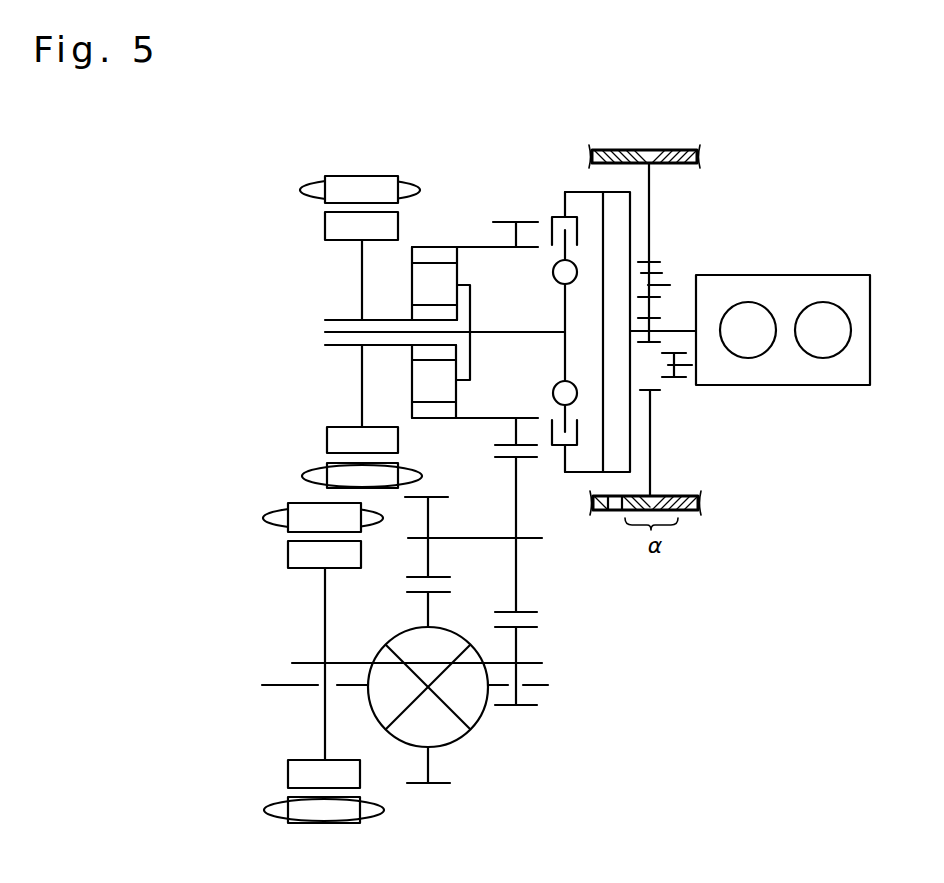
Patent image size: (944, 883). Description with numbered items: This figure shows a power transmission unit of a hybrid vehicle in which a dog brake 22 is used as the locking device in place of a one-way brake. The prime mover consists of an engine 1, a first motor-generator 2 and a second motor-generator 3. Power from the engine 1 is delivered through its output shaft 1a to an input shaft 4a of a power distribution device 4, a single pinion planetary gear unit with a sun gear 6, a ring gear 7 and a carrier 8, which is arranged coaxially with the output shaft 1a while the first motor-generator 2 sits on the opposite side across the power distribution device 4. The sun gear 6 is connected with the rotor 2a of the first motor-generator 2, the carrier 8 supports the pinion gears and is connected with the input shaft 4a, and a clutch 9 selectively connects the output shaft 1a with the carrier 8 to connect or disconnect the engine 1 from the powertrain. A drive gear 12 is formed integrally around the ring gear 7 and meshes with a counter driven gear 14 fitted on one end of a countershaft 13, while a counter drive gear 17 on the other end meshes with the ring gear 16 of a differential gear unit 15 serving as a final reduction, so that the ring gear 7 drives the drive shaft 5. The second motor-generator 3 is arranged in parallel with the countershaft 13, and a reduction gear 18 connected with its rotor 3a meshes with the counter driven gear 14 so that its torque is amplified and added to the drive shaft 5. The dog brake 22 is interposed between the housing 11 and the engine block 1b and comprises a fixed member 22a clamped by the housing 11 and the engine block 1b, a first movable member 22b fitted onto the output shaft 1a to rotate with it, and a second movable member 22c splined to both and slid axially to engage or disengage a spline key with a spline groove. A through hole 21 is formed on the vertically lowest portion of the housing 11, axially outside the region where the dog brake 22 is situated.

The engine 1 is at (790, 363).
The output shaft 1a is at (686, 327).
The engine block 1b is at (672, 149).
The first motor-generator 2 is at (293, 232).
The rotor 2a is at (346, 435).
The second motor-generator 3 is at (262, 556).
The rotor 3a is at (305, 768).
The power distribution device 4 is at (470, 215).
The input shaft 4a is at (515, 334).
The drive shaft 5 is at (547, 690).
The sun gear 6 is at (412, 350).
The ring gear 7 is at (412, 253).
The carrier 8 is at (471, 300).
The clutch 9 is at (556, 195).
The housing 11 is at (615, 149).
The drive gear 12 is at (510, 221).
The countershaft 13 is at (532, 540).
The counter driven gear 14 is at (497, 455).
The differential gear unit 15 is at (449, 736).
The ring gear 16 is at (437, 786).
The counter drive gear 17 is at (446, 497).
The reduction gear 18 is at (510, 708).
The through hole 21 is at (614, 512).
The dog brake 22 is at (722, 182).
The fixed member 22a is at (653, 455).
The first movable member 22b is at (677, 277).
The second movable member 22c is at (676, 380).